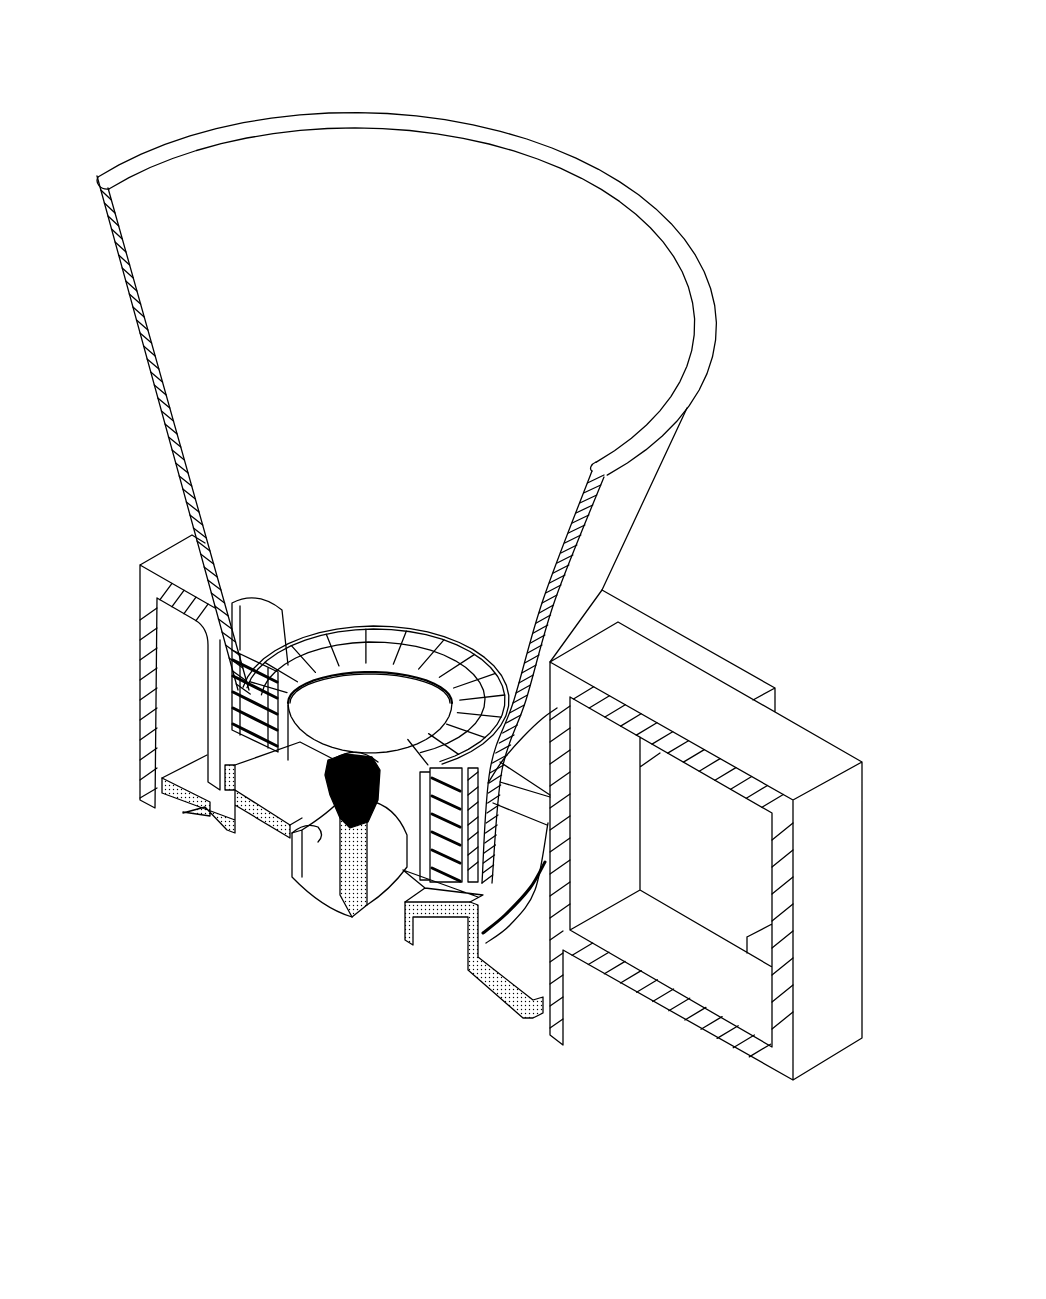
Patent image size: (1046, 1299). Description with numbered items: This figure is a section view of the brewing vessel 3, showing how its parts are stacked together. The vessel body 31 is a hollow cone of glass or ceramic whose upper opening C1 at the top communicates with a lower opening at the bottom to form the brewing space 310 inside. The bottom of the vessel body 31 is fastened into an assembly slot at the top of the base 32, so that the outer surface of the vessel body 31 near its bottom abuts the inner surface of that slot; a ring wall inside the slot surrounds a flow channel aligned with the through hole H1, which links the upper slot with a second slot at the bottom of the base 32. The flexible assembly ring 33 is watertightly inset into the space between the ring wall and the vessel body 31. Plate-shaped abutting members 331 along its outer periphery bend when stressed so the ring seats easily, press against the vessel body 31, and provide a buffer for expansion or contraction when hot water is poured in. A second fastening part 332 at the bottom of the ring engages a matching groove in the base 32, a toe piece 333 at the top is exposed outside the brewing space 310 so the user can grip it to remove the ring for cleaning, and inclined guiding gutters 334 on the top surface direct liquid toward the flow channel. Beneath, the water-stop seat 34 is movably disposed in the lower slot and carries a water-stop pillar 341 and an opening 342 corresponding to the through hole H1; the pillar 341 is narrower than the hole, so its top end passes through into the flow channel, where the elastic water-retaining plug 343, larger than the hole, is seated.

The brewing vessel 3 is at (762, 58).
The vessel body 31 is at (736, 302).
The brewing space 310 is at (591, 234).
The upper opening C1 is at (442, 130).
The base 32 is at (772, 656).
The flexible assembly ring 33 is at (474, 640).
The abutting members 331 is at (240, 684).
The second fastening part 332 is at (240, 714).
The toe piece 333 is at (249, 607).
The guiding gutters 334 is at (422, 660).
The water-stop seat 34 is at (496, 994).
The water-stop pillar 341 is at (352, 888).
The opening 342 is at (311, 866).
The water-retaining plug 343 is at (370, 757).
The through hole H1 is at (292, 834).